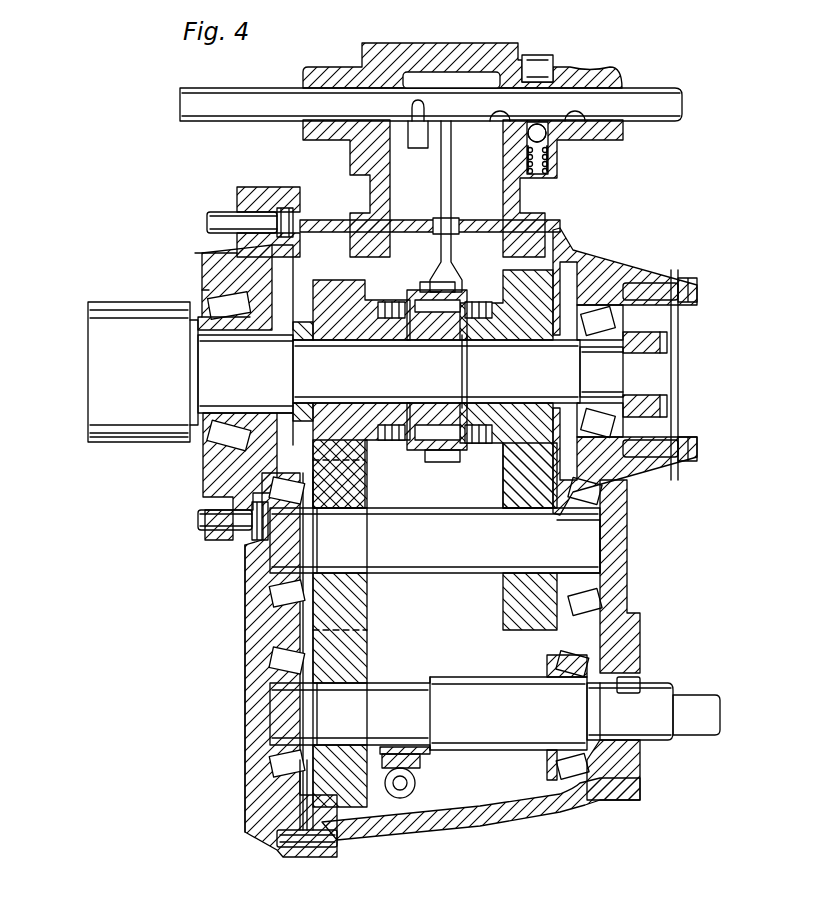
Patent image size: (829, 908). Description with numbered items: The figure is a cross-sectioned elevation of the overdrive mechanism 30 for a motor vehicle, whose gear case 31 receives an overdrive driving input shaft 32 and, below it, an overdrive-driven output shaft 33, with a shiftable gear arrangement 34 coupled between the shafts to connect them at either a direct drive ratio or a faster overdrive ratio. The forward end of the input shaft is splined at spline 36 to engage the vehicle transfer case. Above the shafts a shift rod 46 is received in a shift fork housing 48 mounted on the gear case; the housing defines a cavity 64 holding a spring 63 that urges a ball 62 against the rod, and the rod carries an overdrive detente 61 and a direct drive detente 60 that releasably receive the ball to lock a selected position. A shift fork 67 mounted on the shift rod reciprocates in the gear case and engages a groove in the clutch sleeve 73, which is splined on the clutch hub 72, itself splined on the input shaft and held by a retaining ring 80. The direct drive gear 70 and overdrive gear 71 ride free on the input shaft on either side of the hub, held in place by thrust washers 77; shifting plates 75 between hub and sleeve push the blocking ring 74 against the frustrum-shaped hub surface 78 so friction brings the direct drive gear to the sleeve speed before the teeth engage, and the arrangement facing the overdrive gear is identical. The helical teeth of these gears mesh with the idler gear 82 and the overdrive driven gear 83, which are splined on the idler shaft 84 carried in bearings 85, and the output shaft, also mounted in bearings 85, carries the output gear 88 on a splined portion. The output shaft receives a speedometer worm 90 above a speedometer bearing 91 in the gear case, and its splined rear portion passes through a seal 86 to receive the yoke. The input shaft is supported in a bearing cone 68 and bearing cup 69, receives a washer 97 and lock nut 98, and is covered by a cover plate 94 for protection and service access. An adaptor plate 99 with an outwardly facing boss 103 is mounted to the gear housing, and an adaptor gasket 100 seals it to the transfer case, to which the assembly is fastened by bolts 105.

The overdrive mechanism 30 is at (258, 860).
The gear case 31 is at (412, 830).
The overdrive driving input shaft 32 is at (100, 364).
The overdrive-driven output shaft 33 is at (722, 723).
The shiftable gear arrangement 34 is at (432, 592).
The spline 36 is at (140, 445).
The shift rod 46 is at (650, 101).
The shift fork housing 48 is at (352, 52).
The direct drive detente 60 is at (575, 115).
The overdrive detente 61 is at (498, 115).
The ball 62 is at (552, 134).
The spring 63 is at (556, 175).
The cavity 64 is at (527, 162).
The shift fork 67 is at (444, 197).
The bearing cone 68 is at (260, 297).
The bearing cup 69 is at (660, 325).
The direct drive gear 70 is at (277, 452).
The overdrive gear 71 is at (552, 276).
The clutch hub 72 is at (410, 416).
The clutch sleeve 73 is at (428, 455).
The blocking ring 74 is at (400, 310).
The shifting plates 75 is at (440, 440).
The thrust washers 77 is at (293, 407).
The frustrum-shaped hub surface 78 is at (372, 328).
The retaining ring 80 is at (470, 367).
The idler gear 82 is at (323, 612).
The overdrive driven gear 83 is at (548, 588).
The idler shaft 84 is at (595, 545).
The bearings 85 is at (280, 600).
The seal 86 is at (613, 665).
The output gear 88 is at (348, 787).
The speedometer worm 90 is at (427, 750).
The speedometer bearing 91 is at (400, 799).
The cover plate 94 is at (681, 386).
The washer 97 is at (662, 350).
The lock nut 98 is at (658, 406).
The adaptor plate 99 is at (277, 795).
The adaptor gasket 100 is at (237, 190).
The boss 103 is at (205, 262).
The bolts 105 is at (290, 166).